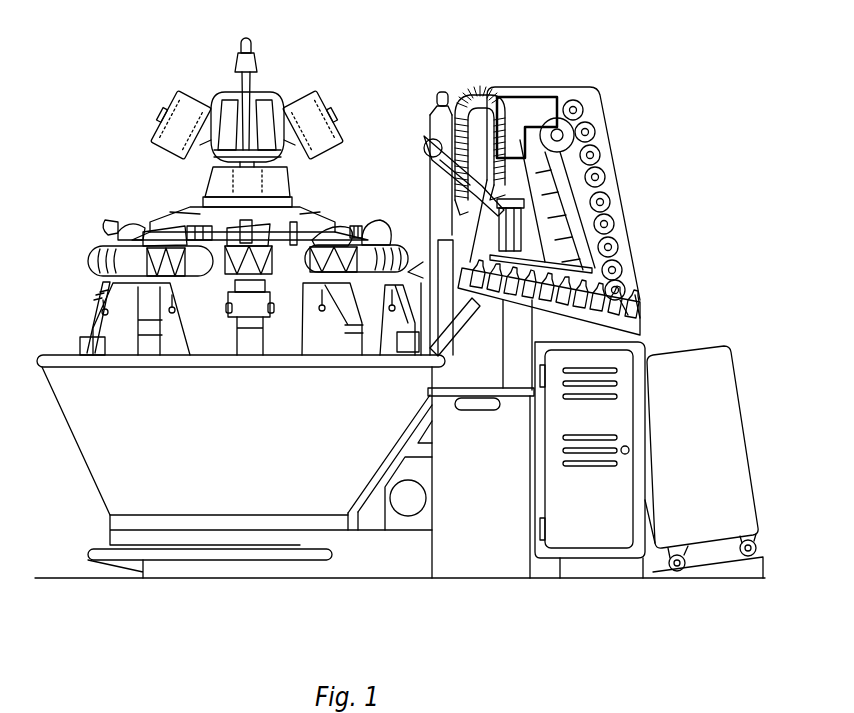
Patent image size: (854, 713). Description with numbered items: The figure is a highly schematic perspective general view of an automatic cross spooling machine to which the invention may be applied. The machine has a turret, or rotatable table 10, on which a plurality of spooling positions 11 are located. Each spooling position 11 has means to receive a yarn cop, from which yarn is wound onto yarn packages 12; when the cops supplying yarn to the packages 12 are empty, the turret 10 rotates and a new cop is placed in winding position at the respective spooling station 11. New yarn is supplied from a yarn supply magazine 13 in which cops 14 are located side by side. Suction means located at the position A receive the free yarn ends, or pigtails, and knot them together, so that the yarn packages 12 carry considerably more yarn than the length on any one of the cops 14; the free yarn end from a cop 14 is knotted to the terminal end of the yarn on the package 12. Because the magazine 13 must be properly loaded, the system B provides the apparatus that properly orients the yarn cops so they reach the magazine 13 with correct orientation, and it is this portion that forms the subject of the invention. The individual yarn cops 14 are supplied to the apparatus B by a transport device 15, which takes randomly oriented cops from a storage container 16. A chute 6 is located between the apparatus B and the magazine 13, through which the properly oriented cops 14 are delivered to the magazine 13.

The turret 10 is at (354, 190).
The spooling positions 11 is at (243, 344).
The yarn packages 12 is at (160, 240).
The chute 6 is at (500, 235).
The yarn supply magazine 13 is at (588, 270).
The cops 14 is at (605, 152).
The transport device 15 is at (606, 110).
The storage container 16 is at (702, 360).
The suction means position A is at (418, 126).
The apparatus for orienting yarn cops B is at (507, 97).